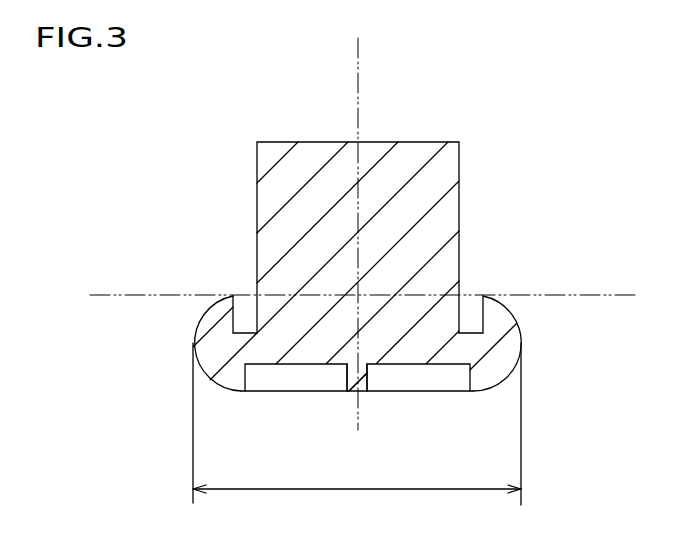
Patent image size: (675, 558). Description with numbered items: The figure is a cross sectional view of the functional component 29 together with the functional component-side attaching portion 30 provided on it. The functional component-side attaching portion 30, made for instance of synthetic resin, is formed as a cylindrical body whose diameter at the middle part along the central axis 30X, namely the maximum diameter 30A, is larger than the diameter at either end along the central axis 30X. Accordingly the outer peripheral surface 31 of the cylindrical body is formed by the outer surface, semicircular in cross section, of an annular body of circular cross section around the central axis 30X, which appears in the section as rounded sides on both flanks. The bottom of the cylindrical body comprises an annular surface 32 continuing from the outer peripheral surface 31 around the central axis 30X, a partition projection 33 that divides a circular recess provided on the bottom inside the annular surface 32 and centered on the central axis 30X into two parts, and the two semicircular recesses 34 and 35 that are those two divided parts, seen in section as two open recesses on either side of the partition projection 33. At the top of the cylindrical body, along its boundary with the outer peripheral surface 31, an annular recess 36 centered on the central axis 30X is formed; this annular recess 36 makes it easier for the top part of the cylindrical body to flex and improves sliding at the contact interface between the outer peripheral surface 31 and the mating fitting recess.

The functional component 29 is at (459, 192).
The functional component-side attaching portion 30 is at (407, 359).
The maximum diameter of the functional component-side attaching portion 30A is at (353, 492).
The central axis 30X is at (358, 421).
The outer peripheral surface 31 is at (521, 347).
The annular surface 32 is at (478, 391).
The partition projection 33 is at (356, 392).
The semicircular recess 34 is at (287, 378).
The semicircular recess 35 is at (432, 377).
The annular recess 36 is at (465, 325).